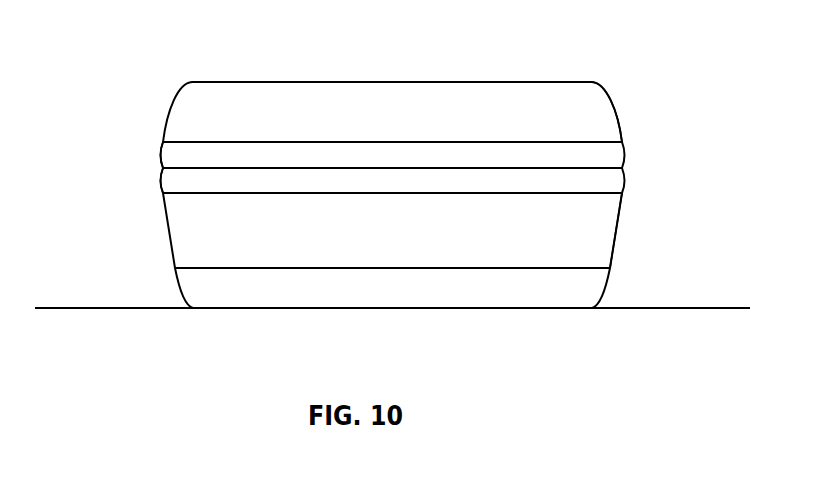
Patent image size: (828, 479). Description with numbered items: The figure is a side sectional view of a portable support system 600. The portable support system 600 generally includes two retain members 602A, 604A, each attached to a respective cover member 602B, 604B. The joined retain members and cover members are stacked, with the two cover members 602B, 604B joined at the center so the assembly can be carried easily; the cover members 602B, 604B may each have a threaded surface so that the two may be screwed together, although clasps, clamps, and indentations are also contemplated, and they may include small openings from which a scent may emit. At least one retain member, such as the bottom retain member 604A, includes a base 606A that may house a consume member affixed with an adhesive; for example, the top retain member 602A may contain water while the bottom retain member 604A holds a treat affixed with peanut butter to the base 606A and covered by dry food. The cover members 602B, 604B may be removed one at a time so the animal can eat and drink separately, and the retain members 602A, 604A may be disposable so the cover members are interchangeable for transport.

The portable support system 600 is at (721, 33).
The retain member 602A is at (612, 119).
The cover member 602B is at (168, 154).
The retain member 604A is at (615, 252).
The cover member 604B is at (168, 178).
The base 606A is at (491, 300).